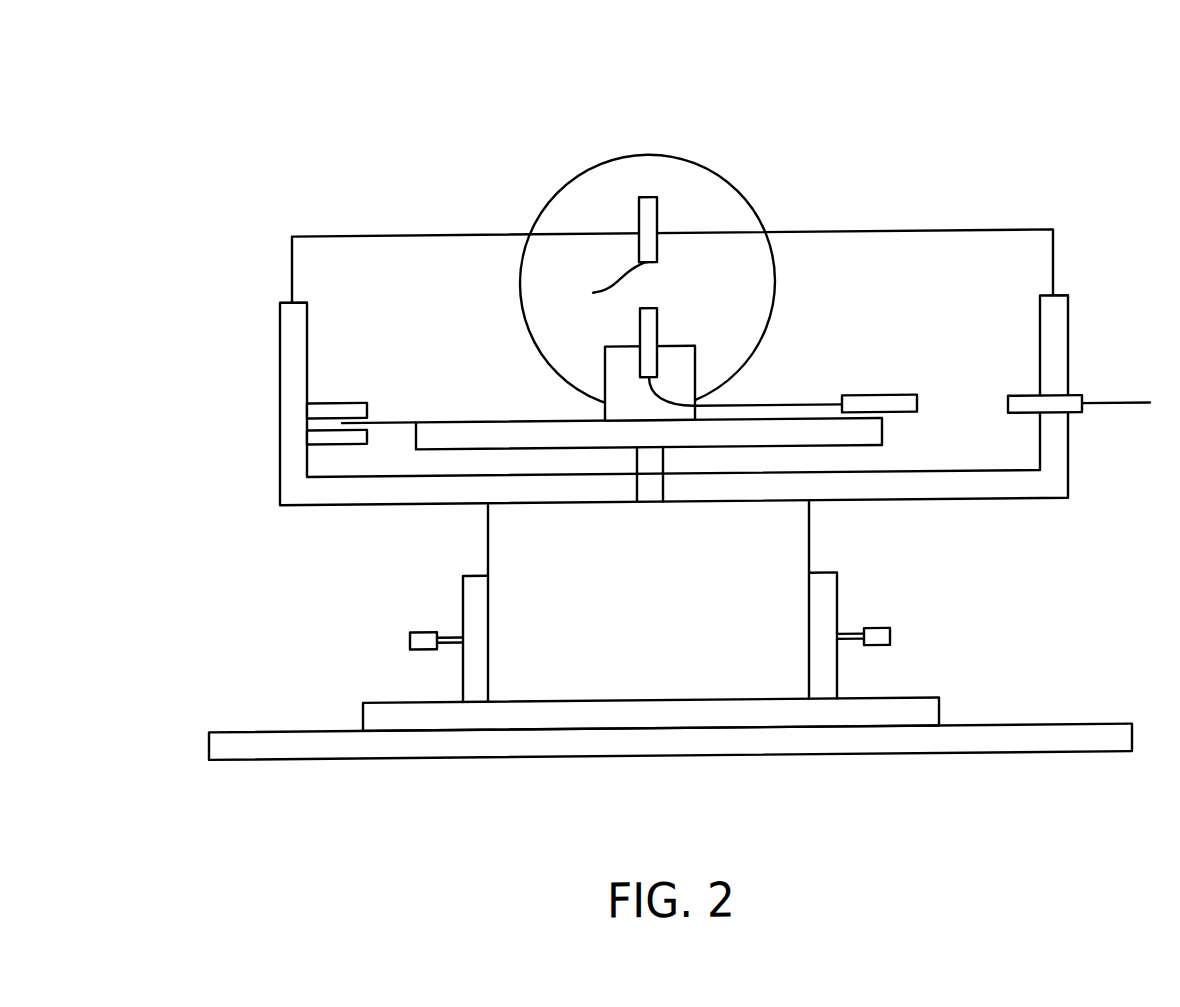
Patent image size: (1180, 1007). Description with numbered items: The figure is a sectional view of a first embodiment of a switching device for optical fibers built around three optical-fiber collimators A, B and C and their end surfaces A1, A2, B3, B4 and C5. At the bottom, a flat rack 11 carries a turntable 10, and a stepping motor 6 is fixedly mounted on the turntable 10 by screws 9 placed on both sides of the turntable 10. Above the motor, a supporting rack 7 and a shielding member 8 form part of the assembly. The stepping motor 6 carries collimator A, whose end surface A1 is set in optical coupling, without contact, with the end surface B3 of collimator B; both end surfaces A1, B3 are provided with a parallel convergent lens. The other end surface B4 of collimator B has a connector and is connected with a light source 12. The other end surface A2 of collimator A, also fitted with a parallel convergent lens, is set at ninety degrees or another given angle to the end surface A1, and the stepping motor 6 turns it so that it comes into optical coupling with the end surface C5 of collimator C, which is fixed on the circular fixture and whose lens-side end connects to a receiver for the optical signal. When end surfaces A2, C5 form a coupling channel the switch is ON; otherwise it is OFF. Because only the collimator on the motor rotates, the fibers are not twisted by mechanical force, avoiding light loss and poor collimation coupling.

The stepping motor 6 is at (809, 546).
The supporting rack 7 is at (472, 420).
The shielding member 8 is at (352, 400).
The screws 9 is at (410, 631).
The turntable 10 is at (932, 717).
The flat rack 11 is at (342, 756).
The light source 12 is at (647, 197).
The end surface A1 is at (652, 308).
The end surface A2 is at (917, 397).
The end surface B3 is at (601, 294).
The end surface B4 is at (647, 197).
The end surface C5 is at (1008, 407).